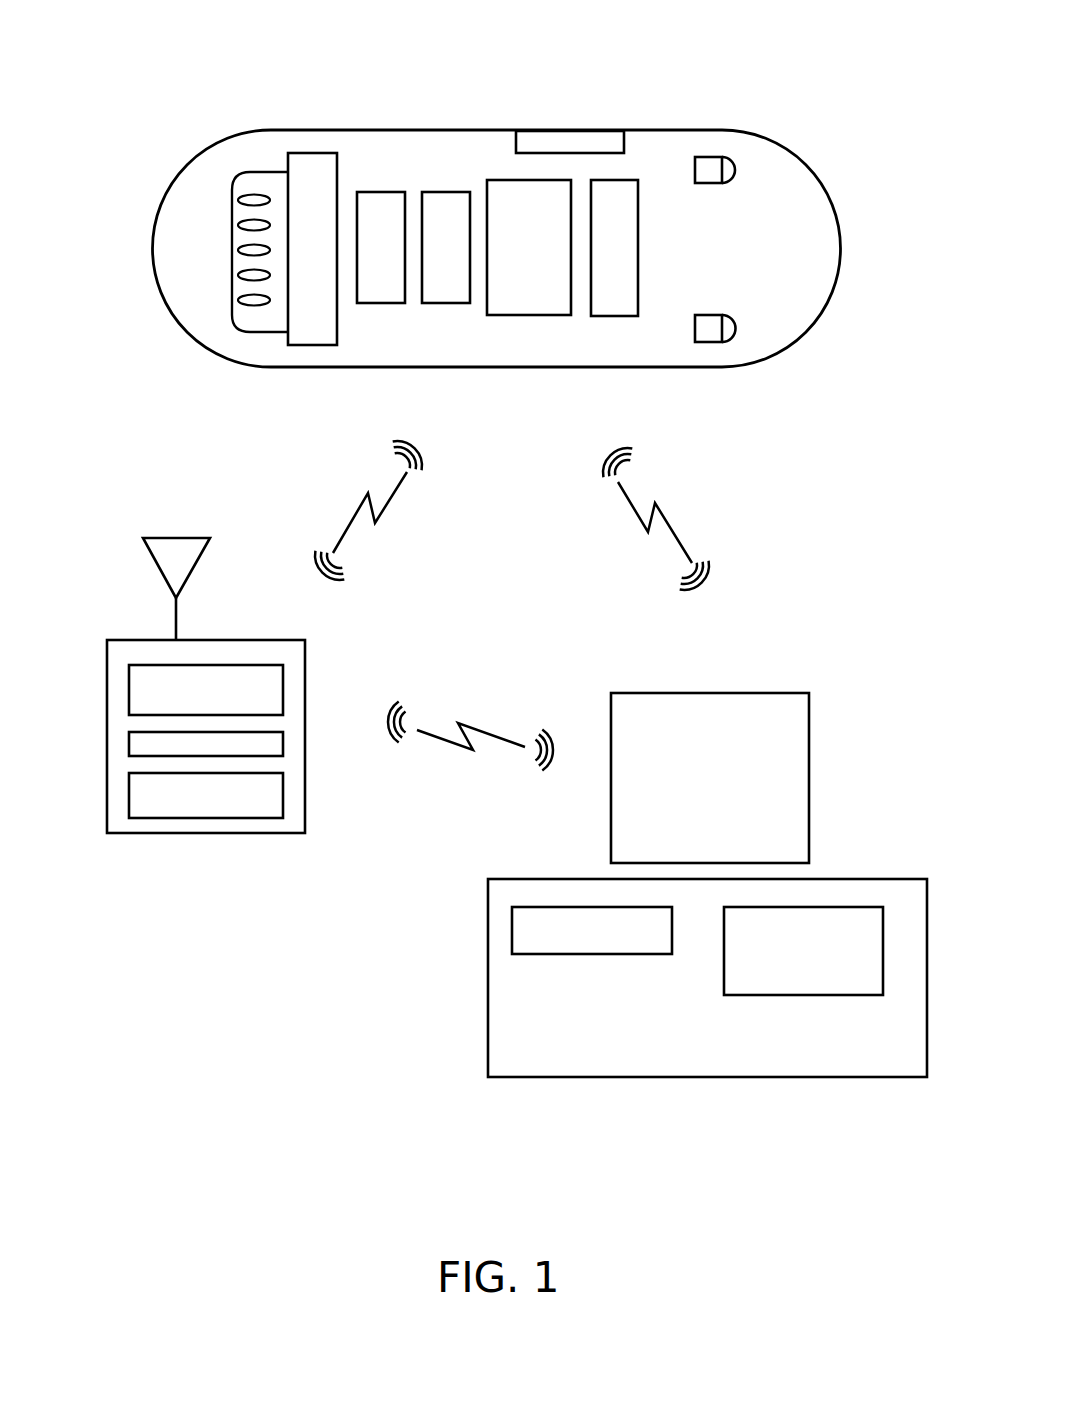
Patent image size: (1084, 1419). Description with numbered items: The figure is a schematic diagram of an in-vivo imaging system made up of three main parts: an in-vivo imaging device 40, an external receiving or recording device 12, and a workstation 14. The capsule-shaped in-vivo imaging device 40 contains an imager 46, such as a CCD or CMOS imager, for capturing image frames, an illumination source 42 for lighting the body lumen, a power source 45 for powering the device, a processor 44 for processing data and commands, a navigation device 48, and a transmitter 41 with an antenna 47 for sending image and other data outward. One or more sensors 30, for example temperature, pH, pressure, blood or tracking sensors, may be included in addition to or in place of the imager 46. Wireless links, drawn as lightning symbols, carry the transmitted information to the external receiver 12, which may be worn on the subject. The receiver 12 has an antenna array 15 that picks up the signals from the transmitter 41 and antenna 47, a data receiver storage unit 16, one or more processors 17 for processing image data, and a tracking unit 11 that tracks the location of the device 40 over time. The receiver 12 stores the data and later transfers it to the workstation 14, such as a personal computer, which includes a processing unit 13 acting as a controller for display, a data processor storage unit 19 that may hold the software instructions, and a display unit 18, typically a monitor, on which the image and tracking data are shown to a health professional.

The in-vivo imaging device 40 is at (167, 79).
The sensor 30 is at (571, 134).
The illumination source 42 is at (700, 157).
The processor 44 is at (382, 192).
The navigation device 48 is at (448, 192).
The power source 45 is at (523, 315).
The imager 46 is at (610, 317).
The transmitter 41 is at (308, 345).
The antenna 47 is at (235, 330).
The external receiving device 12 is at (125, 873).
The antenna array 15 is at (155, 565).
The processor 17 is at (129, 690).
The tracking unit 11 is at (129, 745).
The data receiver storage unit 16 is at (129, 810).
The display unit 18 is at (809, 740).
The workstation 14 is at (433, 1022).
The data processor storage unit 19 is at (590, 954).
The processing unit 13 is at (793, 995).